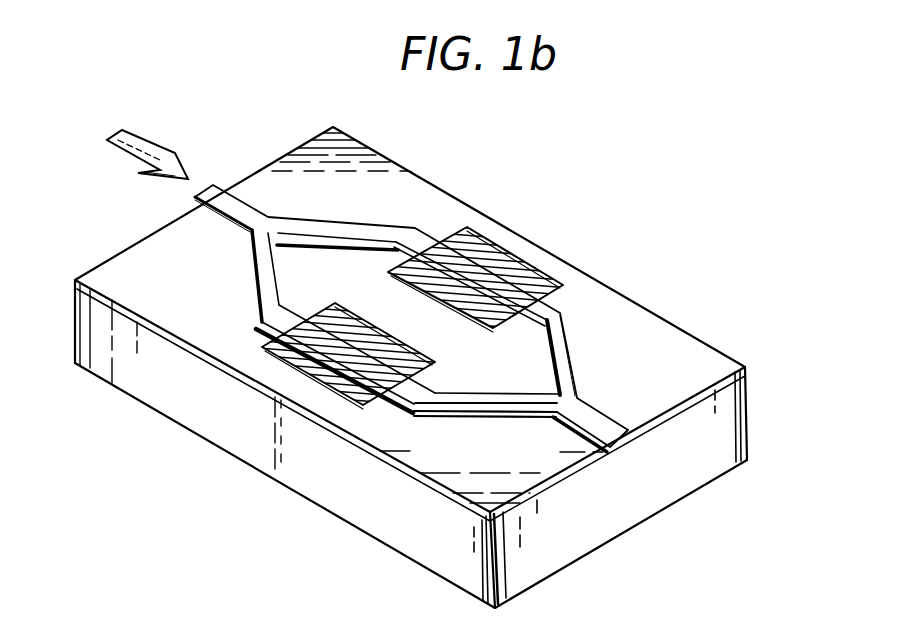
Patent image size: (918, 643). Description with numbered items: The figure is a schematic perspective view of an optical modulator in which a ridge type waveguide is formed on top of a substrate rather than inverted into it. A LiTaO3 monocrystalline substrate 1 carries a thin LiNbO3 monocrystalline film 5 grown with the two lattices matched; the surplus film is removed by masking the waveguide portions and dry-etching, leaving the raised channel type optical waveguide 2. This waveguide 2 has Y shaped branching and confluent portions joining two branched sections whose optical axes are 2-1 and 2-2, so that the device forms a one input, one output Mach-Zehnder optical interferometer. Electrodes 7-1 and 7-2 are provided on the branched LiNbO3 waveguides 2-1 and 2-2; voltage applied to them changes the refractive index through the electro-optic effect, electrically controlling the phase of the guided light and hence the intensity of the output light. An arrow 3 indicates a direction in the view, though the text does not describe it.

The LiTaO3 monocrystalline substrate 1 is at (240, 433).
The channel type optical waveguide 2 is at (603, 425).
The first branched waveguide section 2-1 is at (222, 360).
The second branched waveguide section 2-2 is at (560, 328).
The direction of gas flow / applied force arrow 3 is at (140, 145).
The thin LiNbO3 monocrystalline film 5 is at (422, 485).
The first electrode 7-1 is at (503, 252).
The second electrode 7-2 is at (340, 397).